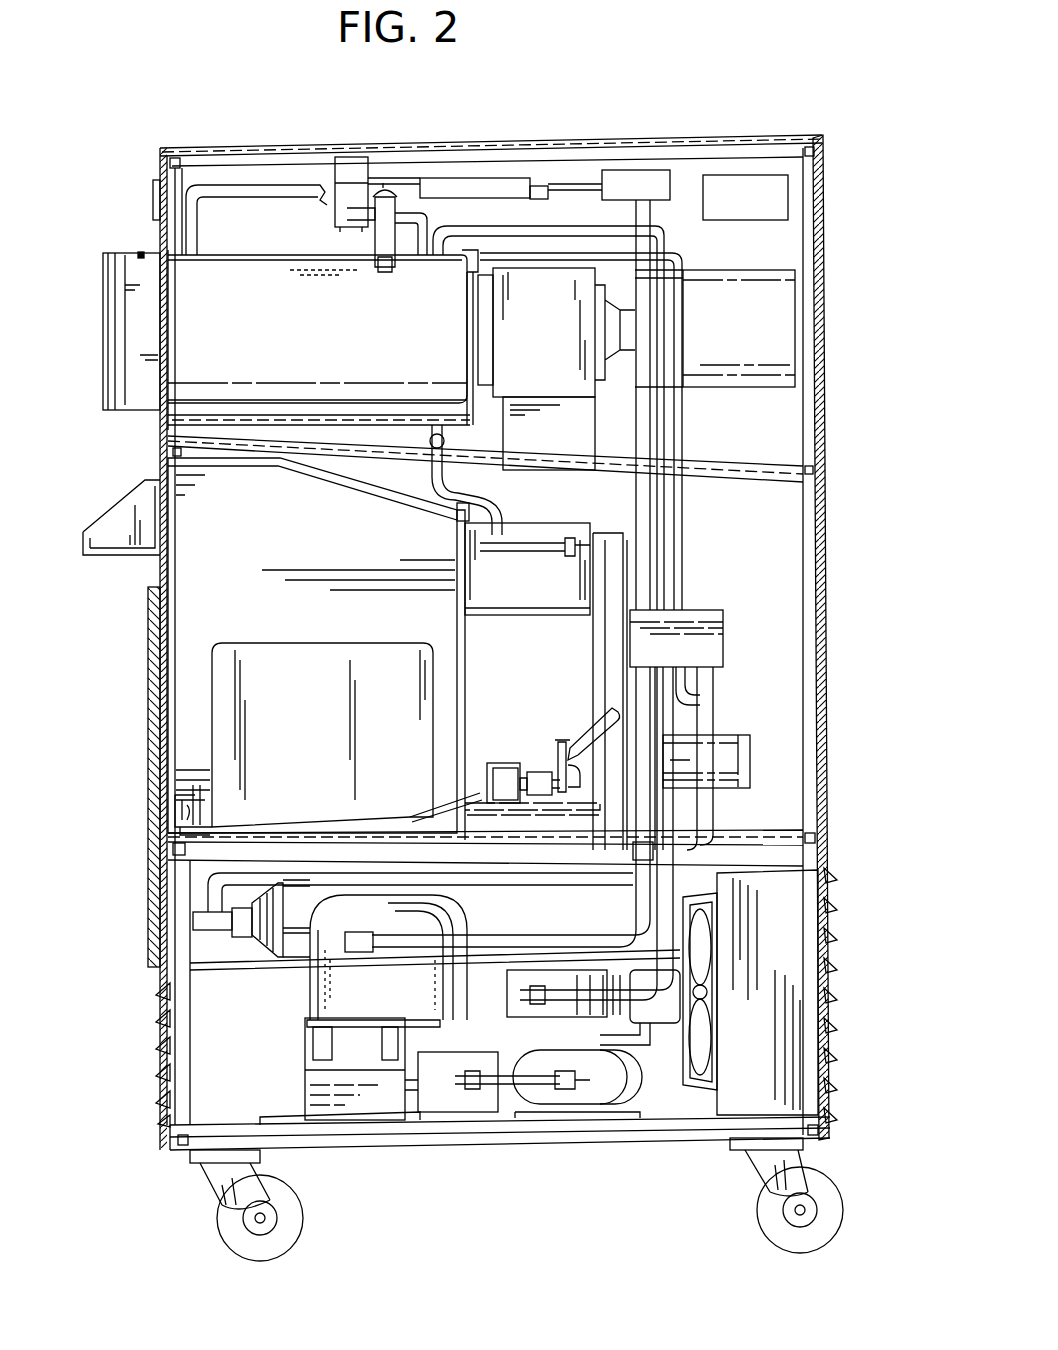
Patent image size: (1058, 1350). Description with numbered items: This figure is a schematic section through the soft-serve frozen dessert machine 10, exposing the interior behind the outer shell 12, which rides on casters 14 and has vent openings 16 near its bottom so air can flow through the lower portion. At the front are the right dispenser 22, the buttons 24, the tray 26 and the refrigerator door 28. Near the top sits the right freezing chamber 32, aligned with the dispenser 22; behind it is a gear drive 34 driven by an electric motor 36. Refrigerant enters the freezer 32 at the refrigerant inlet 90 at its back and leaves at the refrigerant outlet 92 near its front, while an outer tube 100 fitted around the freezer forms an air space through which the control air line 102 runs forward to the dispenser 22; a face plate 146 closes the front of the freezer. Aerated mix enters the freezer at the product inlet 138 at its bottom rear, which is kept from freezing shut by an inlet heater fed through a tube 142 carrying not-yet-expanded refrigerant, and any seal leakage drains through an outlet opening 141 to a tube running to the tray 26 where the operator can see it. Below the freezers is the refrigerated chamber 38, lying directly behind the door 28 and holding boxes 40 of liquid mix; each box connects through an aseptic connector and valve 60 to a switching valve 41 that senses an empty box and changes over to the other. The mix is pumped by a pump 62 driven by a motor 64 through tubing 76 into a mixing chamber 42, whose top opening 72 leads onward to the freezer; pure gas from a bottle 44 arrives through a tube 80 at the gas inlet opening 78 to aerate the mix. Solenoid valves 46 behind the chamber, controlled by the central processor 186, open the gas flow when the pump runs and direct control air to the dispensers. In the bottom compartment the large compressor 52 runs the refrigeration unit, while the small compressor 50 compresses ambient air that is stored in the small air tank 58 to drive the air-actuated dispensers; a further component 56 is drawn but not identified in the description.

The soft-serve frozen dessert machine 10 is at (590, 112).
The outer shell 12 is at (754, 141).
The casters 14 is at (297, 1241).
The vent openings 16 is at (162, 1032).
The right dispenser 22 is at (102, 337).
The buttons 24 is at (155, 198).
The tray 26 is at (160, 502).
The refrigerator door 28 is at (148, 680).
The freezing chamber 32 is at (316, 345).
The gear drive 34 is at (528, 343).
The electric motor 36 is at (718, 341).
The refrigerated chamber 38 is at (260, 553).
The boxes of liquid frozen dessert mix 40 is at (293, 706).
The switching valve 41 is at (503, 763).
The mixing chamber 42 is at (590, 654).
The bottle of medical-grade bottled gas 44 is at (278, 967).
The solenoid valves 46 is at (720, 586).
The small compressor 50 is at (450, 1104).
The large compressor 52 is at (418, 916).
The fan 56 is at (693, 1104).
The small air tank 58 is at (575, 1104).
The aseptic connector and valve 60 is at (185, 786).
The pump 62 is at (548, 770).
The motor 64 is at (736, 733).
The internally-threaded opening 72 is at (573, 553).
The tubing 76 is at (592, 730).
The gas inlet opening 78 is at (622, 695).
The tube 80 is at (712, 698).
The refrigerant inlet 90 is at (422, 248).
The refrigerant outlet 92 is at (200, 258).
The outer tube 100 is at (287, 273).
The control air line 102 is at (562, 252).
The product inlet 138 is at (428, 438).
The outlet opening 141 is at (470, 424).
The tube 142 is at (437, 178).
The face plate 146 is at (148, 277).
The central processor 186 is at (721, 209).